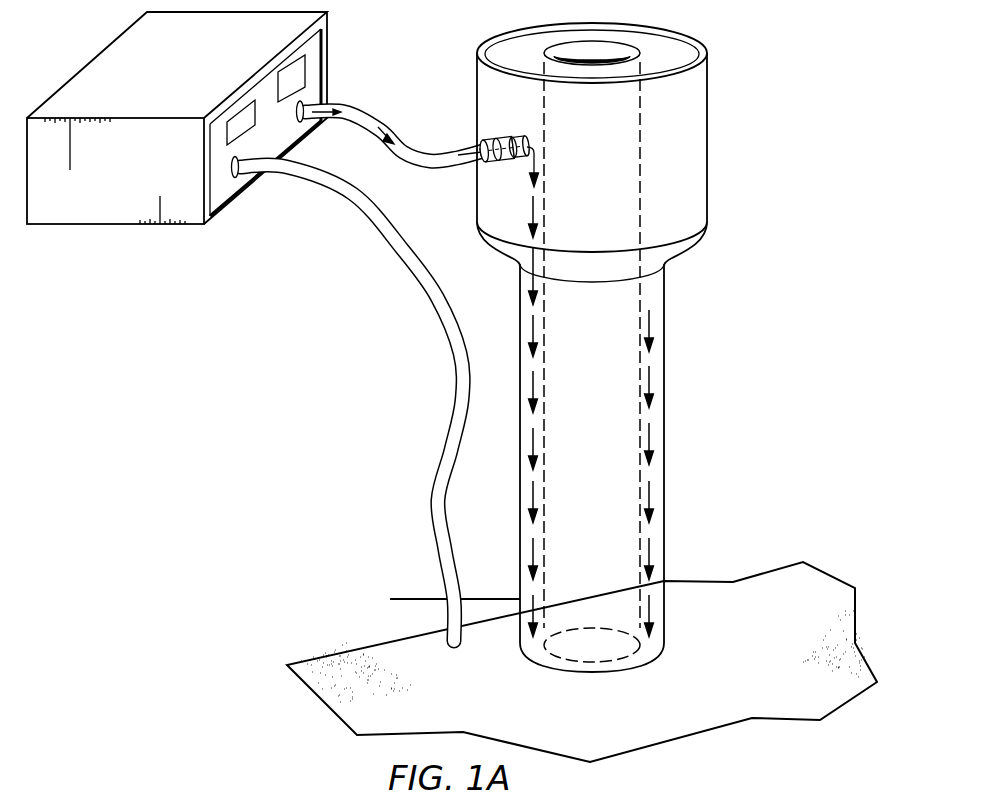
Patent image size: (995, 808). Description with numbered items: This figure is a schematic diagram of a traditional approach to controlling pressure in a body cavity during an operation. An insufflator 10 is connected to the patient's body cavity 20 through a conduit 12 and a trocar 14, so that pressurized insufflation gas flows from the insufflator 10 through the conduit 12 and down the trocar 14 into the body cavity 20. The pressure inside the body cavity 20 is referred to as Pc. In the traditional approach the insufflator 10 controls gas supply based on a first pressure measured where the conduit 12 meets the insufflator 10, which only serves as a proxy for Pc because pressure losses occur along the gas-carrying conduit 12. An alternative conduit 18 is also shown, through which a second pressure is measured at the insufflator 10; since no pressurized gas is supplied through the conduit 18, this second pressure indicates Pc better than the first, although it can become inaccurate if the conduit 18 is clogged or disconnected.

The insufflator 10 is at (132, 184).
The conduit 12 is at (381, 122).
The trocar 14 is at (707, 130).
The alternative conduit 18 is at (375, 228).
The body cavity 20 is at (720, 689).